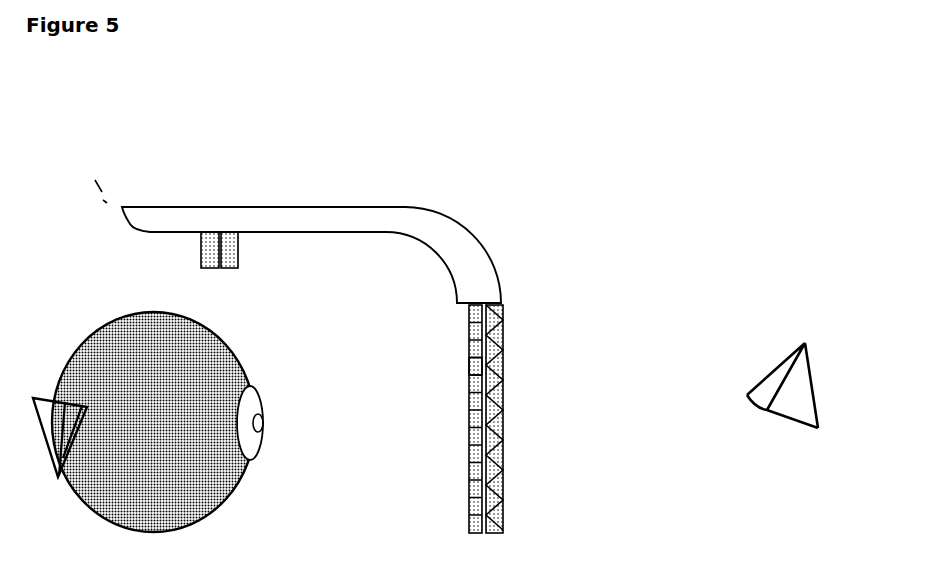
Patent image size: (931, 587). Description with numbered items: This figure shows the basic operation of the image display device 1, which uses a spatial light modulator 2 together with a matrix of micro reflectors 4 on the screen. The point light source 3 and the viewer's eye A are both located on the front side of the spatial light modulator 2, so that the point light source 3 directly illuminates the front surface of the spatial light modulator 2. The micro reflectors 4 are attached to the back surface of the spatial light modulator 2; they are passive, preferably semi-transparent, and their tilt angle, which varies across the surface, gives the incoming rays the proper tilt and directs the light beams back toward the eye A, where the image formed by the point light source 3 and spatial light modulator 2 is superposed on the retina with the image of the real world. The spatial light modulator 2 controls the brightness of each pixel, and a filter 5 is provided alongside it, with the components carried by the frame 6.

The image display device 1 is at (568, 247).
The spatial light modulator 2 is at (473, 532).
The point light source 3 is at (222, 232).
The micro reflector 4 is at (503, 482).
The filter 5 is at (482, 360).
The frame 6 is at (442, 222).
The viewer's eyes A is at (130, 312).